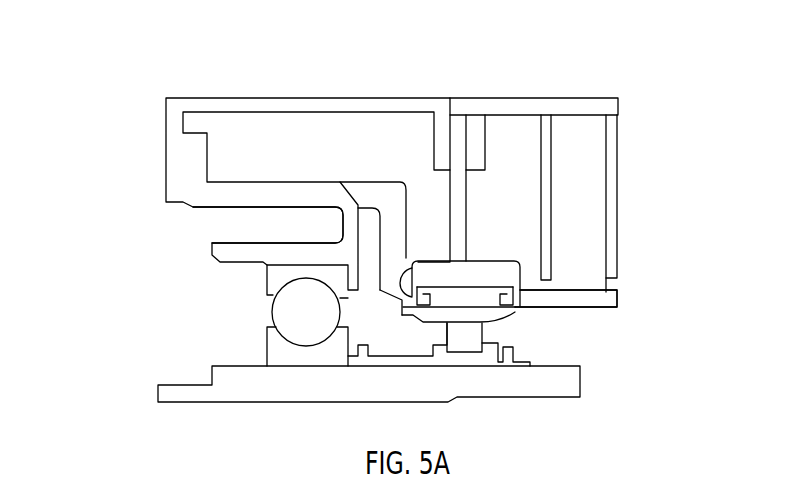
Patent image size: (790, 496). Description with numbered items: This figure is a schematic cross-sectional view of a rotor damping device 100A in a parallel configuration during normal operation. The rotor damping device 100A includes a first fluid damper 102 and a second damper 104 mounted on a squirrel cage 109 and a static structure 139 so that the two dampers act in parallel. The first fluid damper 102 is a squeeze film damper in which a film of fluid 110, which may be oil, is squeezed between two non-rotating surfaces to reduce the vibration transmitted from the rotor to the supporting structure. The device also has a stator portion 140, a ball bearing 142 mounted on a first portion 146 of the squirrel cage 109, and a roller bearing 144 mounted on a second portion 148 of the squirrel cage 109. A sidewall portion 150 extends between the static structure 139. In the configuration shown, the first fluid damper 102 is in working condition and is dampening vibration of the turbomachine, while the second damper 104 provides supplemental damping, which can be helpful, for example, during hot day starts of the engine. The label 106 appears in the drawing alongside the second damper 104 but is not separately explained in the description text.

The rotor damping device 100A is at (175, 70).
The stator portion 140 is at (295, 98).
The static structure 139 is at (520, 98).
The sidewall portion 150 is at (617, 182).
The second damper 104 is at (585, 262).
The substrate 106 is at (593, 289).
The squirrel cage 109 is at (232, 208).
The first portion 146 is at (298, 273).
The film of fluid 110 is at (482, 273).
The ball bearing 142 is at (268, 306).
The second portion 148 is at (402, 300).
The roller bearing 144 is at (447, 333).
The first fluid damper 102 is at (520, 313).